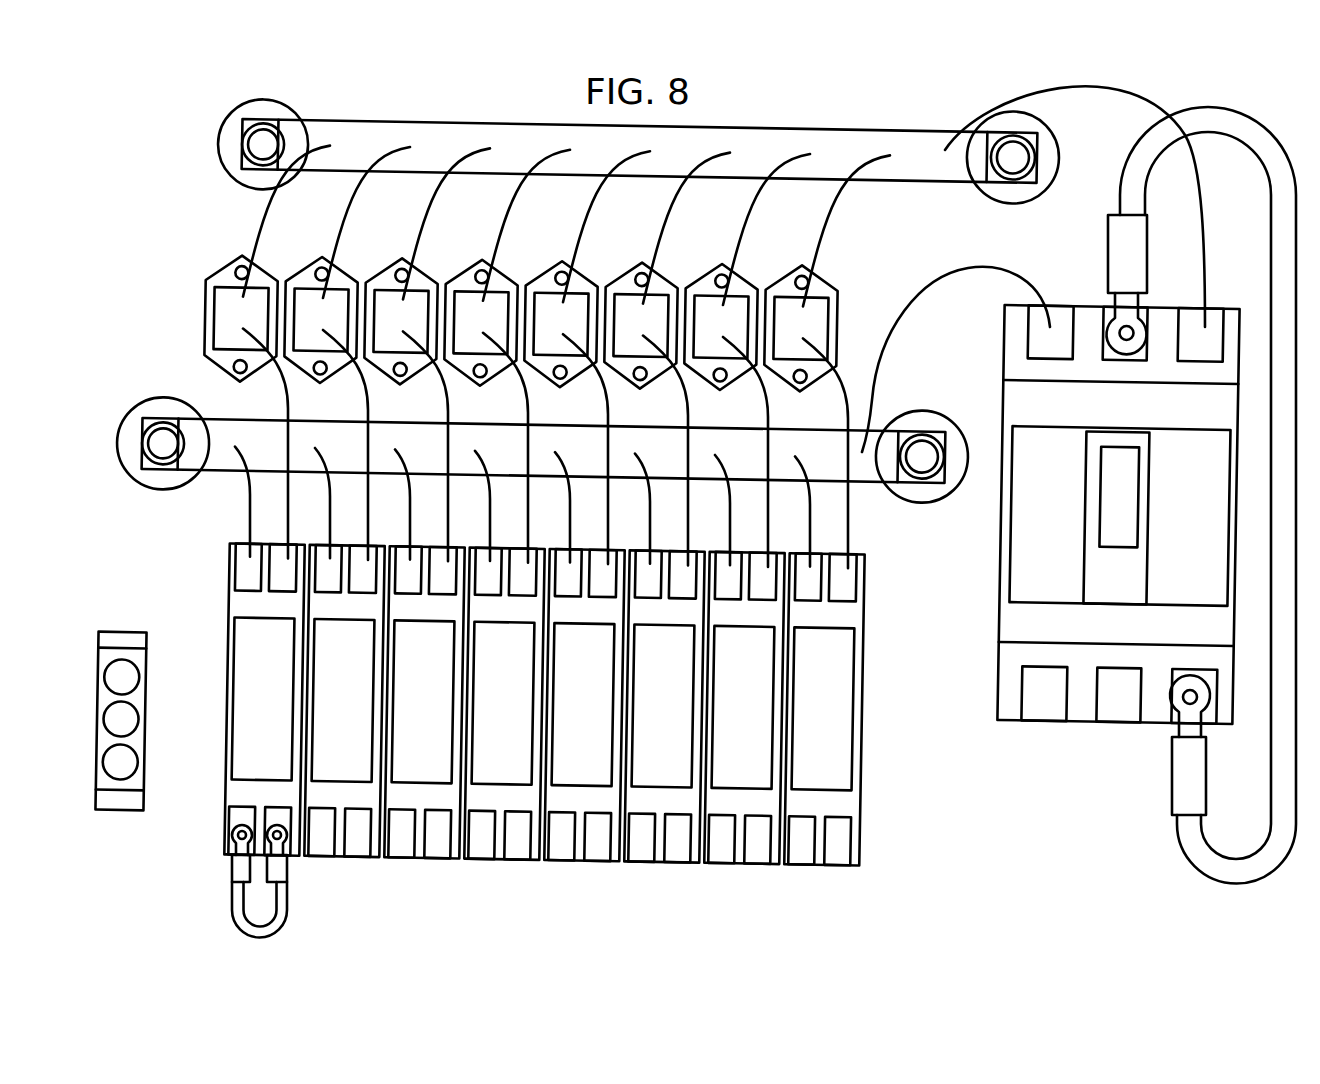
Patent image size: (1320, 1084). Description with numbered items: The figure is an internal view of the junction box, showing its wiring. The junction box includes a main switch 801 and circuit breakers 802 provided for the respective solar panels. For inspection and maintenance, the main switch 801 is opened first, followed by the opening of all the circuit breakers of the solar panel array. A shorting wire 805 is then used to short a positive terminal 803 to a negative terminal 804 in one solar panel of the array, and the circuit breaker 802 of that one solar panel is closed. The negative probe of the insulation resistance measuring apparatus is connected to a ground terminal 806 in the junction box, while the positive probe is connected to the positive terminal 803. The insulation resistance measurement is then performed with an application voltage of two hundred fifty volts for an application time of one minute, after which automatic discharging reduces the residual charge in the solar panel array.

The main switch 801 is at (1009, 624).
The circuit breaker 802 is at (847, 742).
The positive terminal 803 is at (231, 835).
The negative terminal 804 is at (290, 838).
The shorting wire 805 is at (277, 908).
The ground terminal 806 is at (120, 672).